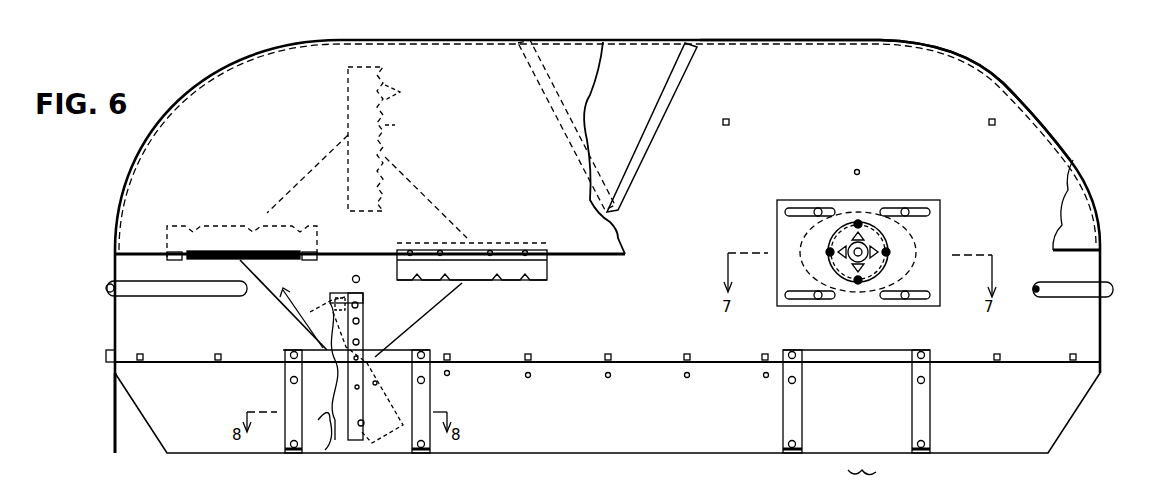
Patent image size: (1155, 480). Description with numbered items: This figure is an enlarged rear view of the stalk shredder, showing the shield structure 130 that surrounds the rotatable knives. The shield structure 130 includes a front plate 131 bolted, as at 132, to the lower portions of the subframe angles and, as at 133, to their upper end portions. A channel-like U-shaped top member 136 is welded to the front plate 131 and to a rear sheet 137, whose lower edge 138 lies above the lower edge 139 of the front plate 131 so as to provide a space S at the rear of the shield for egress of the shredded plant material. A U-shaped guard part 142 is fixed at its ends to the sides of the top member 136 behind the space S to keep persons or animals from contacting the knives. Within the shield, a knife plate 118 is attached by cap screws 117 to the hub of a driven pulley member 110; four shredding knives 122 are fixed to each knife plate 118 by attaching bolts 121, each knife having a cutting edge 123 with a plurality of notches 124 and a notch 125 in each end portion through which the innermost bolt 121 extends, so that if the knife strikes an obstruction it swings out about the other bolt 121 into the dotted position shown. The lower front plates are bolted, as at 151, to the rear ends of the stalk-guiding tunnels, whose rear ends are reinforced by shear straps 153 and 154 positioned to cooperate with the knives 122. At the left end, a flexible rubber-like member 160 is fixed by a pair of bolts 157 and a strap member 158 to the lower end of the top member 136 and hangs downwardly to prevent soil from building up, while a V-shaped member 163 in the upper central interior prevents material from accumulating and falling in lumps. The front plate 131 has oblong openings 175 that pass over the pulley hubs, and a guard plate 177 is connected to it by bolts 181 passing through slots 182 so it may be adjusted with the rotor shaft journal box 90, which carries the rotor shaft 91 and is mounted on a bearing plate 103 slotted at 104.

The shield structure 130 is at (211, 66).
The front plate 131 is at (815, 58).
The U-shaped top member 136 is at (972, 58).
The rear sheet 137 is at (445, 60).
The bolts 133 is at (725, 118).
The V-shaped member 163 is at (660, 128).
The shredding knives 122 is at (348, 92).
The notches 124 is at (352, 466).
The cutting edge 123 is at (385, 125).
The attaching bolts 121 is at (280, 250).
The cap screws 117 is at (375, 255).
The knife plate 118 is at (424, 300).
The shear strap 153 is at (418, 350).
The lower edge of rear sheet 138 is at (578, 258).
The lower edge of front sheet 139 is at (558, 362).
The bolts 132 is at (290, 352).
The bolts 151 is at (290, 380).
The shear strap 154 is at (285, 392).
The U-shaped guard part 142 is at (202, 290).
The bolts 157 is at (104, 356).
The strap member 158 is at (110, 349).
The flexible member 160 is at (110, 407).
The pulley members 110 is at (895, 238).
The oblong openings 175 is at (905, 228).
The guard plate 177 is at (875, 206).
The slots 182 is at (921, 208).
The bolts 181 is at (818, 208).
The notch 125 is at (370, 440).
The space S is at (1082, 267).
The rotor shaft 91 is at (853, 472).
The rotor shaft journal box 90 is at (915, 472).
The bearing plate 103 is at (754, 473).
The slot 104 is at (952, 473).